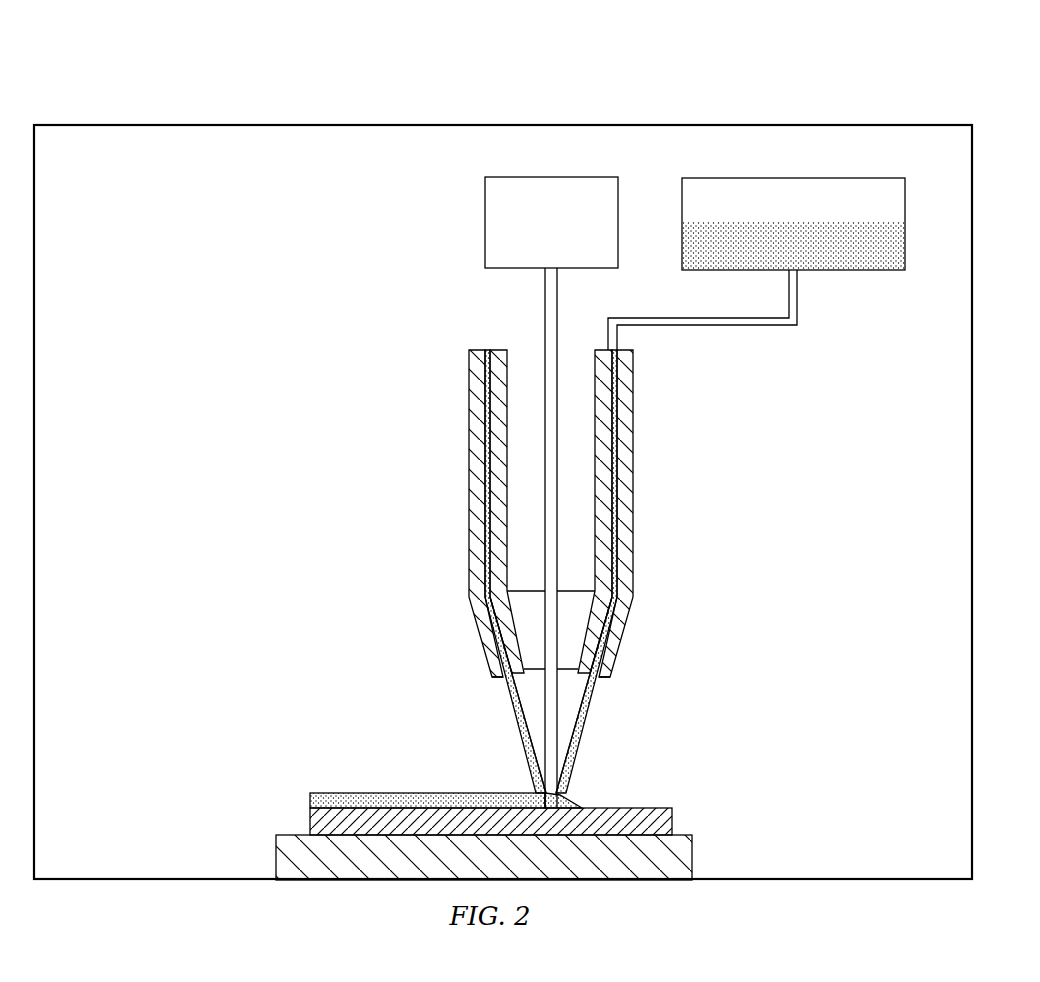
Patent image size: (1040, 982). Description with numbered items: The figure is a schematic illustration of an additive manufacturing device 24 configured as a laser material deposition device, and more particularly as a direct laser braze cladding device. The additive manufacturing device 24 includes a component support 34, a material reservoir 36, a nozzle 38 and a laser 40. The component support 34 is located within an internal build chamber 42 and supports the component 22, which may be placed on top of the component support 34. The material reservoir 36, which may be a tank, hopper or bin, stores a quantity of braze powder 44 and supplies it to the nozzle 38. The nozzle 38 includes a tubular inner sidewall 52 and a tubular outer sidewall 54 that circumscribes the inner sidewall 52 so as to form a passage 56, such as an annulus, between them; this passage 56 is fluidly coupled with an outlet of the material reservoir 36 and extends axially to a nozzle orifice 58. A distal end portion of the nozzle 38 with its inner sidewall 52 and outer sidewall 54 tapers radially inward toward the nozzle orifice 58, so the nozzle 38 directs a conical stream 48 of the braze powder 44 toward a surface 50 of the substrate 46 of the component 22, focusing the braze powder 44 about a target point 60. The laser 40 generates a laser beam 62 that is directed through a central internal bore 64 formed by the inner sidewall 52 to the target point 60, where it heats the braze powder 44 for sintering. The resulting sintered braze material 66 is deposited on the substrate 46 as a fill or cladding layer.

The component 22 is at (489, 799).
The additive manufacturing device 24 is at (942, 112).
The component support 34 is at (692, 858).
The material reservoir 36 is at (905, 200).
The nozzle 38 is at (540, 522).
The laser 40 is at (485, 228).
The internal build chamber 42 is at (259, 472).
The braze powder 44 is at (905, 245).
The substrate 46 is at (675, 822).
The stream of braze powder 48 is at (590, 720).
The substrate surface 50 is at (345, 793).
The tubular inner sidewall 52 is at (587, 545).
The tubular outer sidewall 54 is at (633, 540).
The passage 56 is at (487, 395).
The nozzle orifice 58 is at (505, 678).
The target point 60 is at (550, 812).
The laser beam 62 is at (543, 722).
The internal bore 64 is at (527, 385).
The sintered braze material 66 is at (375, 793).